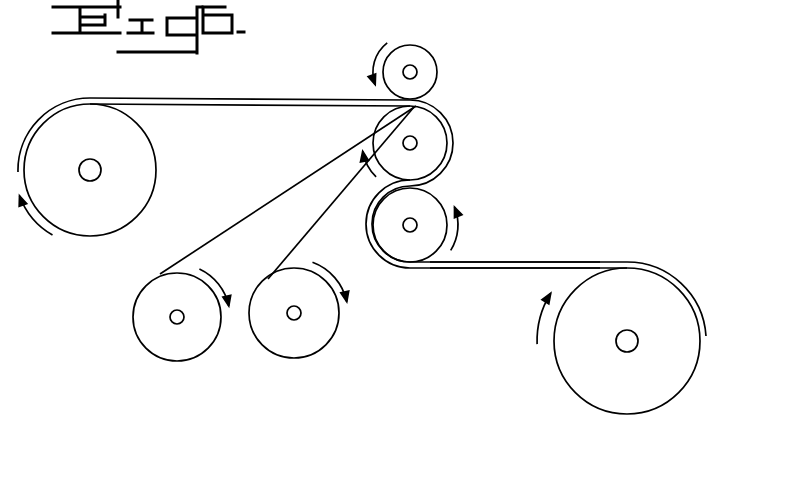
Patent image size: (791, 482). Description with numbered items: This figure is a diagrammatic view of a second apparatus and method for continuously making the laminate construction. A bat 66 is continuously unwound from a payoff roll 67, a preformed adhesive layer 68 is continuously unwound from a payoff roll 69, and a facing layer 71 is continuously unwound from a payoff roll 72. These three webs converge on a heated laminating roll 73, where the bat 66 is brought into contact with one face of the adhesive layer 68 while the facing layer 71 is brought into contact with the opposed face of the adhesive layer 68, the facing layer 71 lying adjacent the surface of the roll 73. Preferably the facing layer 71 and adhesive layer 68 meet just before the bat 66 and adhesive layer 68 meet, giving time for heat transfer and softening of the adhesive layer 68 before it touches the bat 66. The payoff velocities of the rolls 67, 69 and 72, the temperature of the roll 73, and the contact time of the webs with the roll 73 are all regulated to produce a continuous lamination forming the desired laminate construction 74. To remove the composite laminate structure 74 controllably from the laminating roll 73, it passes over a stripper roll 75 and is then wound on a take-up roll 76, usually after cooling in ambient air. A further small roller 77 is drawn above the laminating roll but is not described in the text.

The bat 66 is at (205, 100).
The payoff roll 67 is at (92, 236).
The preformed adhesive layer 68 is at (278, 192).
The payoff roll 69 is at (157, 357).
The facing layer 71 is at (307, 222).
The payoff roll 72 is at (292, 358).
The heated laminating roll 73 is at (450, 142).
The laminate construction 74 is at (523, 262).
The stripper roll 75 is at (437, 195).
The take-up roll 76 is at (632, 414).
The guide roller 77 is at (433, 53).